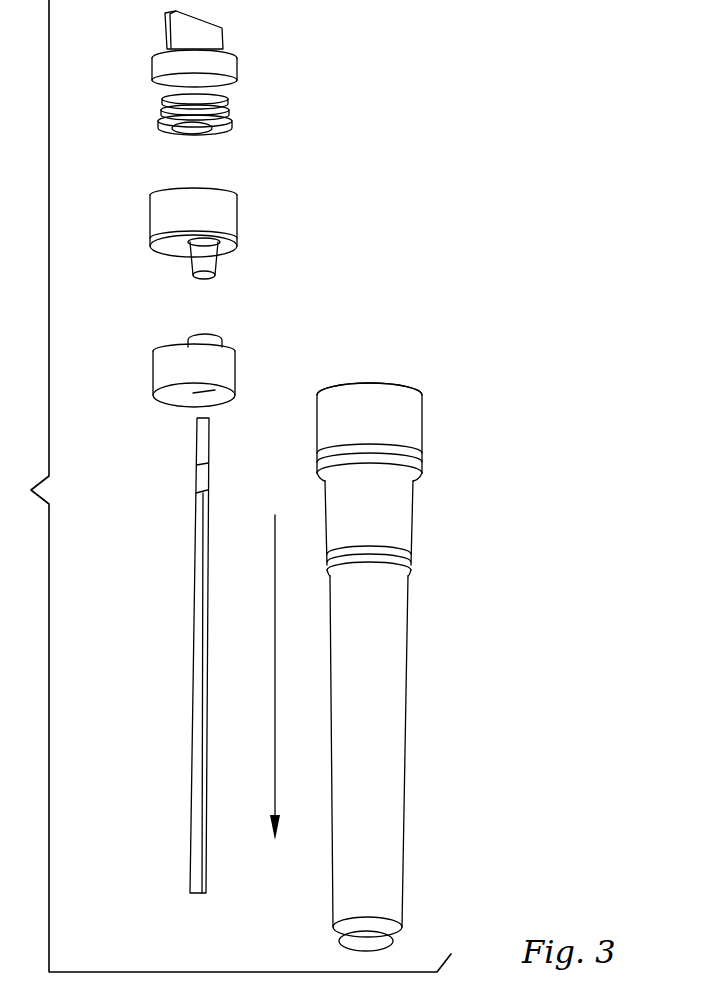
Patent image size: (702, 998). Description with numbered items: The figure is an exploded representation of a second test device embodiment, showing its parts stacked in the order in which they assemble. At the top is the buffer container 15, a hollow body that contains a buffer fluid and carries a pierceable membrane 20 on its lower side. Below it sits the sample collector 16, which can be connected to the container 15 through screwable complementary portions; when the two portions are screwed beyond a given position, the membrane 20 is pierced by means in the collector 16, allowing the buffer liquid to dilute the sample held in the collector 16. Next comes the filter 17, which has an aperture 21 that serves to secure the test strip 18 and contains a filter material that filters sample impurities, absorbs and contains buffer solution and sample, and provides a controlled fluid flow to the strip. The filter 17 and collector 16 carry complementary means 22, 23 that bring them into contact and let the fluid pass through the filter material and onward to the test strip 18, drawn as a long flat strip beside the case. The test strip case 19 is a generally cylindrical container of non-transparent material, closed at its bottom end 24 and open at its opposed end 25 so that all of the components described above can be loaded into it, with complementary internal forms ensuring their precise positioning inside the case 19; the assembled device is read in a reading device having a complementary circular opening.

The buffer container 15 is at (266, 64).
The sample collector 16 is at (266, 202).
The filter 17 is at (262, 362).
The test strip 18 is at (152, 632).
The test strip case 19 is at (442, 533).
The pierceable membrane 20 is at (194, 130).
The aperture 21 is at (205, 391).
The complementary means 22 is at (212, 279).
The complementary means 23 is at (205, 336).
The bottom end 24 is at (367, 941).
The opposed end 25 is at (372, 401).